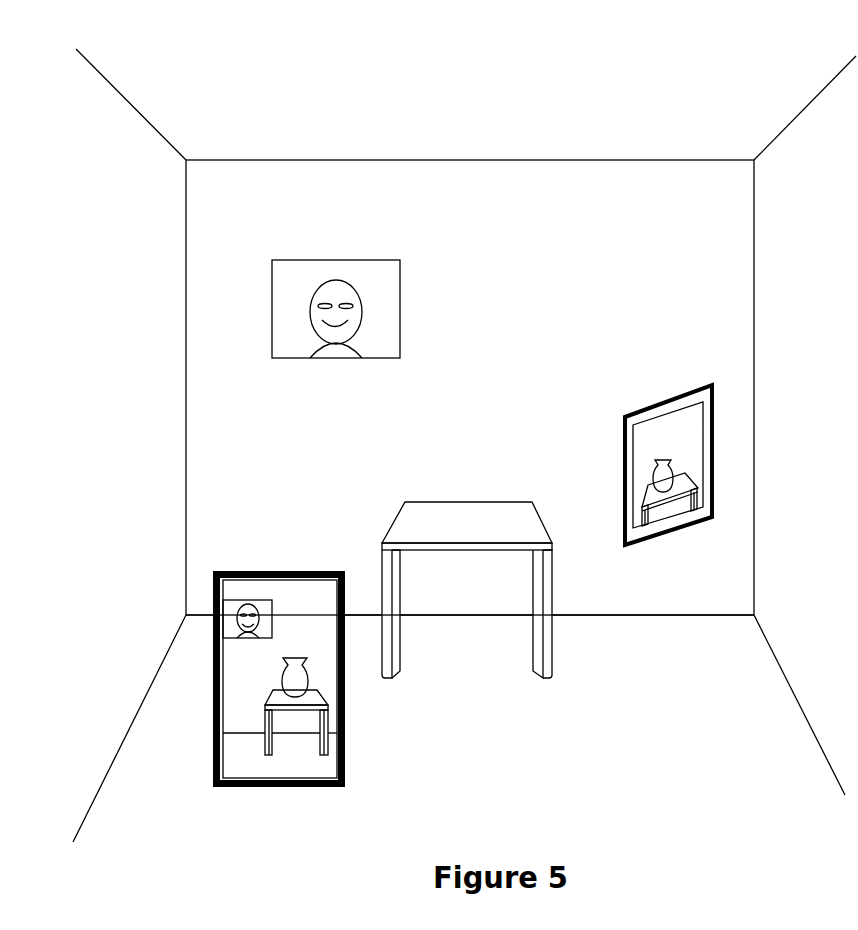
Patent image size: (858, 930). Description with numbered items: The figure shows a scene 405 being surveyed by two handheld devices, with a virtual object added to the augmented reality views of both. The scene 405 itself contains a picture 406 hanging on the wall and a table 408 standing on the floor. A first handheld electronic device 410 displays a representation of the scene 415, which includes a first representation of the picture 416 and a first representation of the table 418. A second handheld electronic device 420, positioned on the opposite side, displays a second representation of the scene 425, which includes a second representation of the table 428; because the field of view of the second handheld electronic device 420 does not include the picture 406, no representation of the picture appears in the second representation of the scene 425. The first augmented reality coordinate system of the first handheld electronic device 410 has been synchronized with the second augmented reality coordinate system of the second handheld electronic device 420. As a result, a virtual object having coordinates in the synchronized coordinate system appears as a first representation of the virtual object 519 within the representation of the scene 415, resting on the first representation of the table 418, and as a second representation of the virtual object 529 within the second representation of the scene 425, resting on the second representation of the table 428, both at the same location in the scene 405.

The scene 405 is at (732, 220).
The picture 406 is at (373, 257).
The table 408 is at (482, 498).
The first handheld electronic device 410 is at (307, 677).
The representation of the scene 415 is at (325, 767).
The first representation of the picture 416 is at (272, 618).
The first representation of the table 418 is at (265, 726).
The second handheld electronic device 420 is at (665, 461).
The second representation of the scene 425 is at (643, 435).
The second representation of the table 428 is at (700, 494).
The first representation of the virtual object 519 is at (308, 678).
The second representation of the virtual object 529 is at (655, 472).